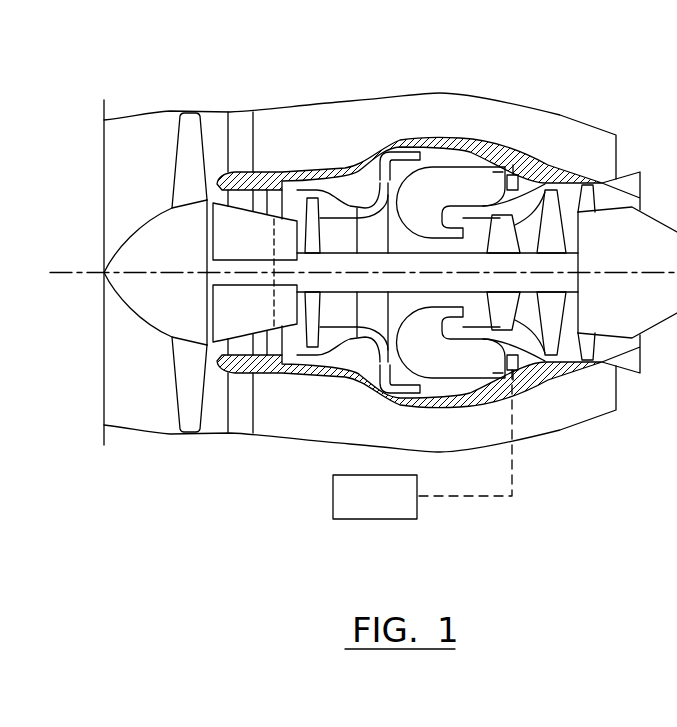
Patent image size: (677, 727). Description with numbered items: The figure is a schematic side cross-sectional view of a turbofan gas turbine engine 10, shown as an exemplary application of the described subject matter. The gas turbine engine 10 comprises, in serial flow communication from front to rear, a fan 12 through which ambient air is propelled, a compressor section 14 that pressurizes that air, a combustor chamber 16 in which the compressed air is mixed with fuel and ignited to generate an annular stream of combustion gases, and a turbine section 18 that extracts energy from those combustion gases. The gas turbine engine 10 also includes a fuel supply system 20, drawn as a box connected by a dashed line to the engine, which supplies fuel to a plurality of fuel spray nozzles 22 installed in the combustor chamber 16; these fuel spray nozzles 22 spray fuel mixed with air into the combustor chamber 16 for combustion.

The turbofan gas turbine engine 10 is at (588, 93).
The fan 12 is at (176, 146).
The compressor section 14 is at (357, 210).
The combustor chamber 16 is at (457, 163).
The turbine section 18 is at (530, 305).
The fuel supply system 20 is at (375, 497).
The fuel spray nozzles 22 is at (503, 168).